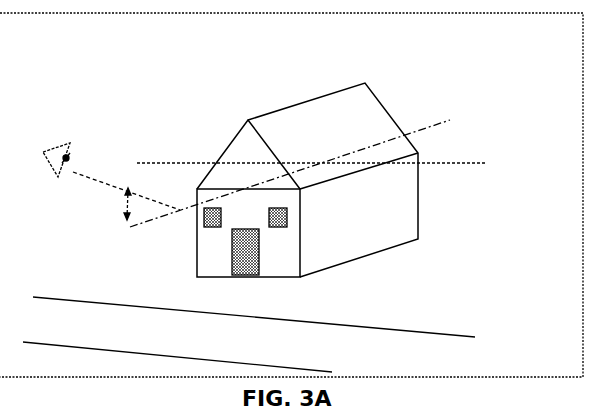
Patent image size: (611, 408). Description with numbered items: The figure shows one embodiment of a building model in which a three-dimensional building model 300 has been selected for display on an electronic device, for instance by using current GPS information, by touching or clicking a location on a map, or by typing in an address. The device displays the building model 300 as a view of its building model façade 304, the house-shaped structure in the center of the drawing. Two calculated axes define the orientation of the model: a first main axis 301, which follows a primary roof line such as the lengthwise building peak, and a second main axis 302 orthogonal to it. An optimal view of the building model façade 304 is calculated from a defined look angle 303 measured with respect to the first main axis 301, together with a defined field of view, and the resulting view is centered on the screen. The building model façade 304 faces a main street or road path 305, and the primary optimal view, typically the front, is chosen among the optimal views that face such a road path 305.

The 3D building model 300 is at (224, 91).
The first main axis 301 is at (425, 130).
The second main axis 302 is at (442, 167).
The look angle 303 is at (126, 208).
The building model façade 304 is at (210, 247).
The road path 305 is at (202, 344).